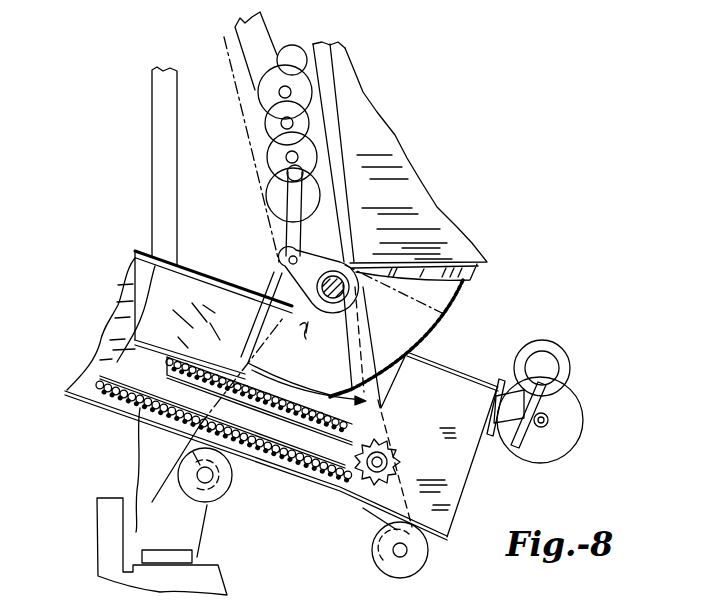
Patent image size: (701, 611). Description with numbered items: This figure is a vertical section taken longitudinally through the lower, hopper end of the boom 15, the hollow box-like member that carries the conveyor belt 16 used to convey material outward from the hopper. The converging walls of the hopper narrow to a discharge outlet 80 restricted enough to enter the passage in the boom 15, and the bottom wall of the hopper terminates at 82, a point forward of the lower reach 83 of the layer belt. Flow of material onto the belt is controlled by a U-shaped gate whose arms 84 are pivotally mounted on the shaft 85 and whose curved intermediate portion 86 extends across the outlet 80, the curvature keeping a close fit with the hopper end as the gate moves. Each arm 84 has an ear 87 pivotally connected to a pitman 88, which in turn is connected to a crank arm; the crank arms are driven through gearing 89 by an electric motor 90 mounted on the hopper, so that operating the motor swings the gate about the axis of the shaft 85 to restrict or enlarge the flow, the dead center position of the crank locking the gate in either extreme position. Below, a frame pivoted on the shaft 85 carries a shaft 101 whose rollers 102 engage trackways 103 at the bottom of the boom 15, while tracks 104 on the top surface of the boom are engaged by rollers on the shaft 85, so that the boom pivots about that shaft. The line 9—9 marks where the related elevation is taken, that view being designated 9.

The section line 9— 9 is at (225, 37).
The boom 15 is at (110, 345).
The conveyor belt 16 is at (393, 450).
The discharge outlet 80 is at (346, 347).
The termination of hopper bottom wall 82 is at (383, 381).
The lower reach of the layer belt 83 is at (401, 462).
The arms of hopper control gate 84 is at (262, 330).
The shaft 85 is at (344, 272).
The intermediate portion of gate 86 is at (321, 386).
The ear 87 is at (289, 270).
The pitman 88 is at (290, 230).
The gearing 89 is at (263, 97).
The electric motor 90 is at (299, 53).
The shaft 101 is at (404, 550).
The rollers 102 is at (218, 488).
The trackways 103 is at (311, 487).
The tracks 104 is at (478, 383).